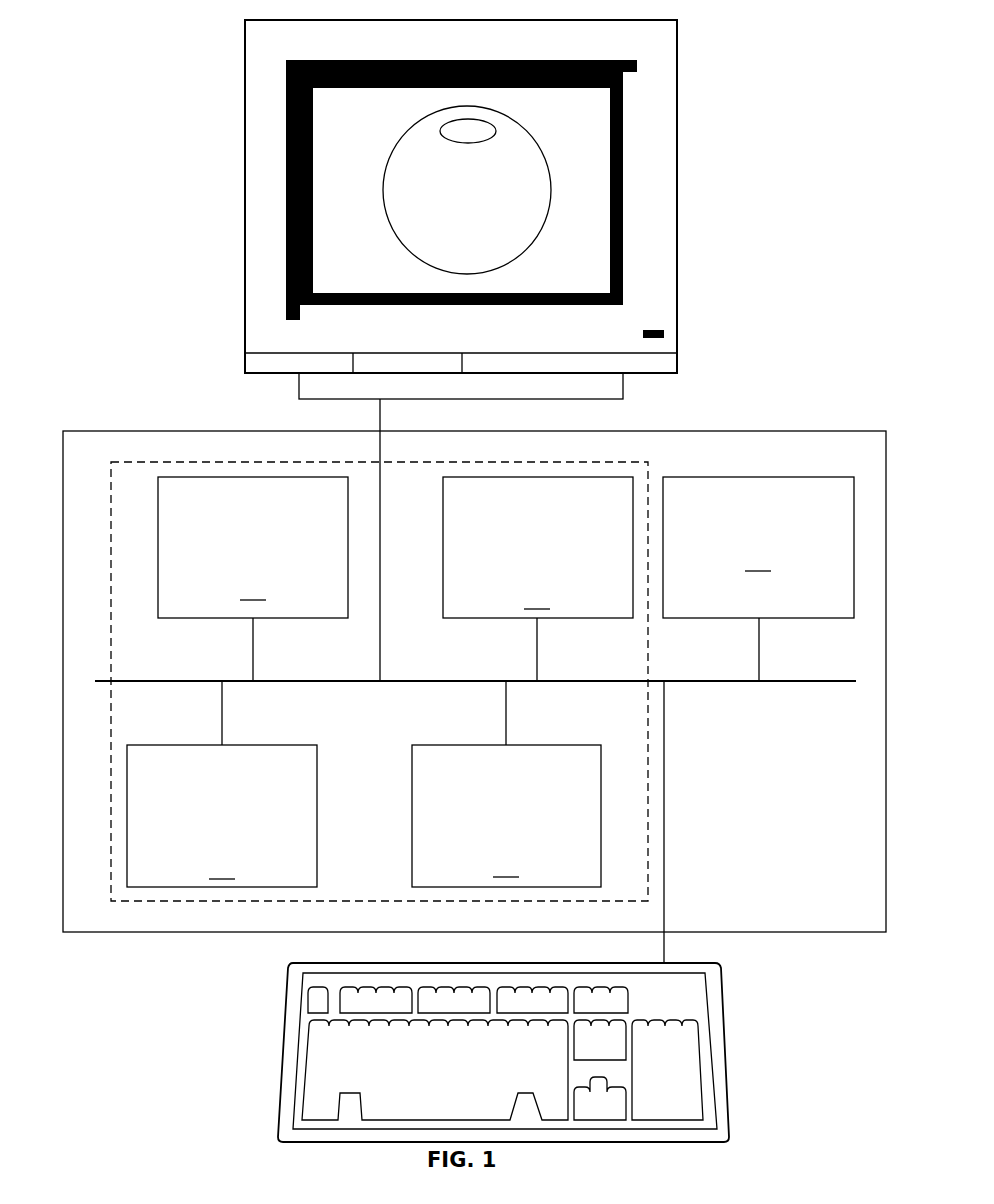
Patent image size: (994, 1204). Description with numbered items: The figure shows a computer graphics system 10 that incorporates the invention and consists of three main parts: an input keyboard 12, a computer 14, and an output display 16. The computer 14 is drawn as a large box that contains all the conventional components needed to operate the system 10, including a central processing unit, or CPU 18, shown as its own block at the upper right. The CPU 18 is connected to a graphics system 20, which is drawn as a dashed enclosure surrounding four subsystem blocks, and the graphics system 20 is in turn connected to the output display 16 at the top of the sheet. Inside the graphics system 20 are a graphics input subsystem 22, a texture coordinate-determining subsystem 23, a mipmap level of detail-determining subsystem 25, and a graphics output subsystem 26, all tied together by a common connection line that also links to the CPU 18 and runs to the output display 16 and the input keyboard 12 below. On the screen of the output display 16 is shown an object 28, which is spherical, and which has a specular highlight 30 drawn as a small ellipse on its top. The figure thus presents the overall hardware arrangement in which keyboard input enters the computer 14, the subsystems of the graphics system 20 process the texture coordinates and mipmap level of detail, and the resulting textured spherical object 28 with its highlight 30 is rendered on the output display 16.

The computer graphics system 10 is at (158, 158).
The input keyboard 12 is at (288, 995).
The computer 14 is at (742, 431).
The output display 16 is at (245, 211).
The central processing unit (CPU) 18 is at (758, 579).
The graphics system 20 is at (648, 790).
The graphics input subsystem 22 is at (506, 784).
The texture coordinate-determining subsystem 23 is at (538, 579).
The mipmap level of detail-determining subsystem 25 is at (222, 784).
The graphics output subsystem 26 is at (253, 579).
The object 28 is at (467, 190).
The specular highlight 30 is at (470, 130).